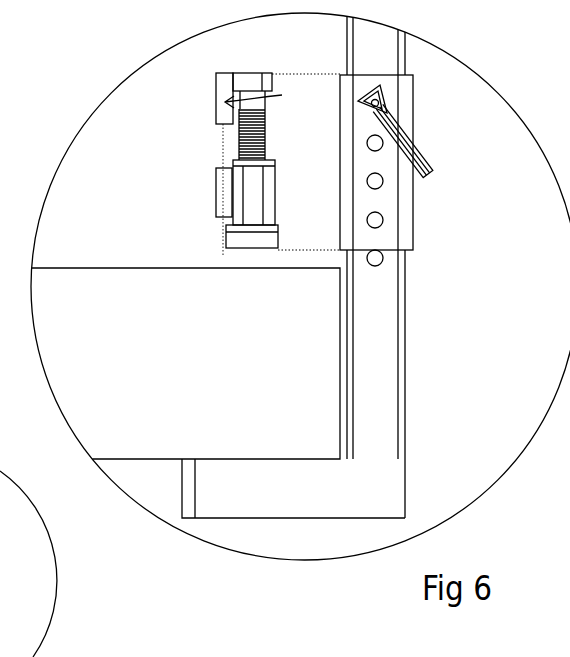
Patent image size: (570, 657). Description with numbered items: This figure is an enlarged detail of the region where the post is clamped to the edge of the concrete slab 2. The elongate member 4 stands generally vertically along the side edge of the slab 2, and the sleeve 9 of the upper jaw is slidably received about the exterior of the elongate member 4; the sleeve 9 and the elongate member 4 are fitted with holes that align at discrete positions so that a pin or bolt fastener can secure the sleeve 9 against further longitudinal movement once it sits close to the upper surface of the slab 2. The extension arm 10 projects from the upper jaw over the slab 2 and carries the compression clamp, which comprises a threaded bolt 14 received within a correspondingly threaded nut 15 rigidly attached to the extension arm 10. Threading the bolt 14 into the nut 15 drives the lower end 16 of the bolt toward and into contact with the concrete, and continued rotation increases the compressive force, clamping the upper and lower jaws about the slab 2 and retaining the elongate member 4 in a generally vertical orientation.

The concrete slab 2 is at (175, 351).
The elongate member 4 is at (380, 328).
The sleeve portion 9 is at (392, 230).
The extension arm 10 is at (304, 85).
The threaded bolt 14 is at (246, 129).
The threaded nut 15 is at (243, 194).
The lower end of the bolt 16 is at (230, 251).